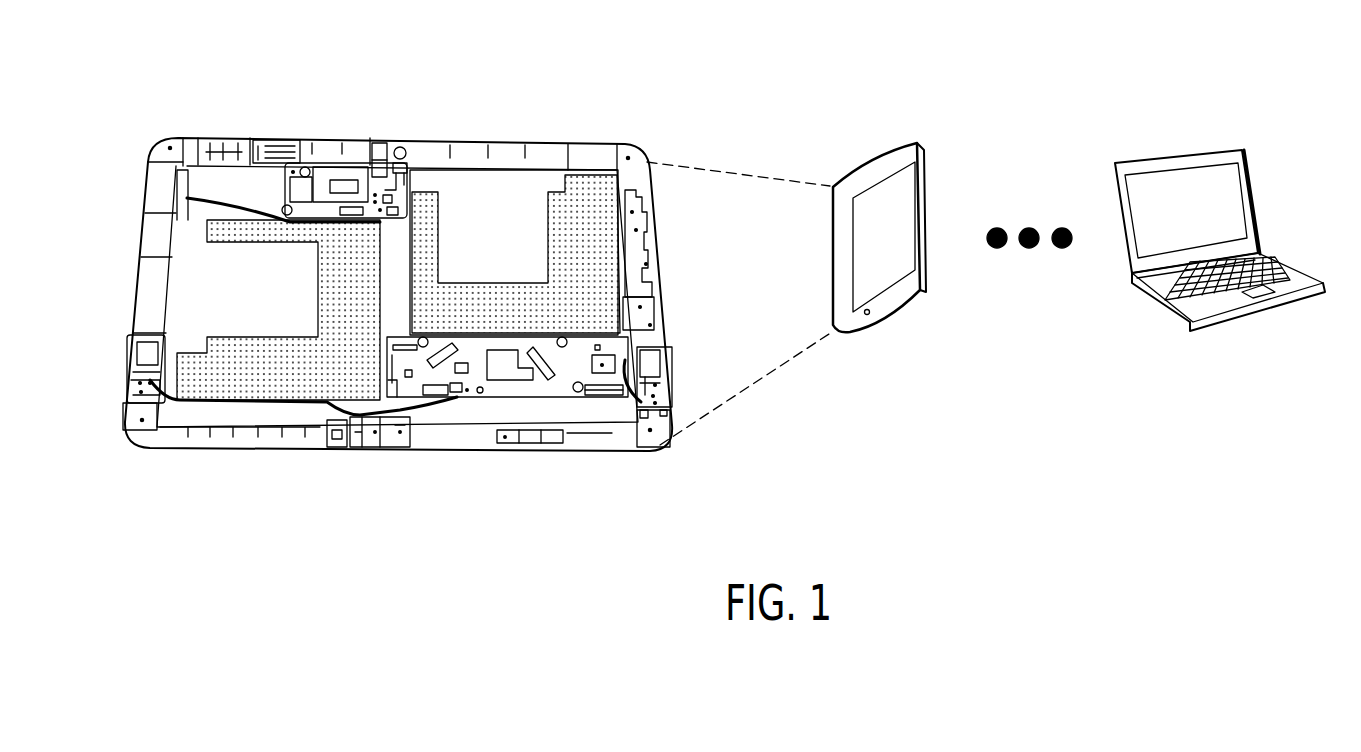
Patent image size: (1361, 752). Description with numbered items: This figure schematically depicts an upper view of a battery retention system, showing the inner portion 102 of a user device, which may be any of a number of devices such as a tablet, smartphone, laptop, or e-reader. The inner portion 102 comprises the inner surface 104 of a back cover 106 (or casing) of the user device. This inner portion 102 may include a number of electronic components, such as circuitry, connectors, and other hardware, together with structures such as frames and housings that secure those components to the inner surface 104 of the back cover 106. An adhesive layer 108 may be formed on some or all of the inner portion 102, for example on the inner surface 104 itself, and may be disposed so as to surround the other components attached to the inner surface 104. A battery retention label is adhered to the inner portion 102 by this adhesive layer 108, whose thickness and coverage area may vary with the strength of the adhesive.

The inner portion 102 is at (583, 58).
The inner surface 104 is at (268, 291).
The back cover 106 is at (598, 146).
The adhesive layer 108 is at (535, 226).